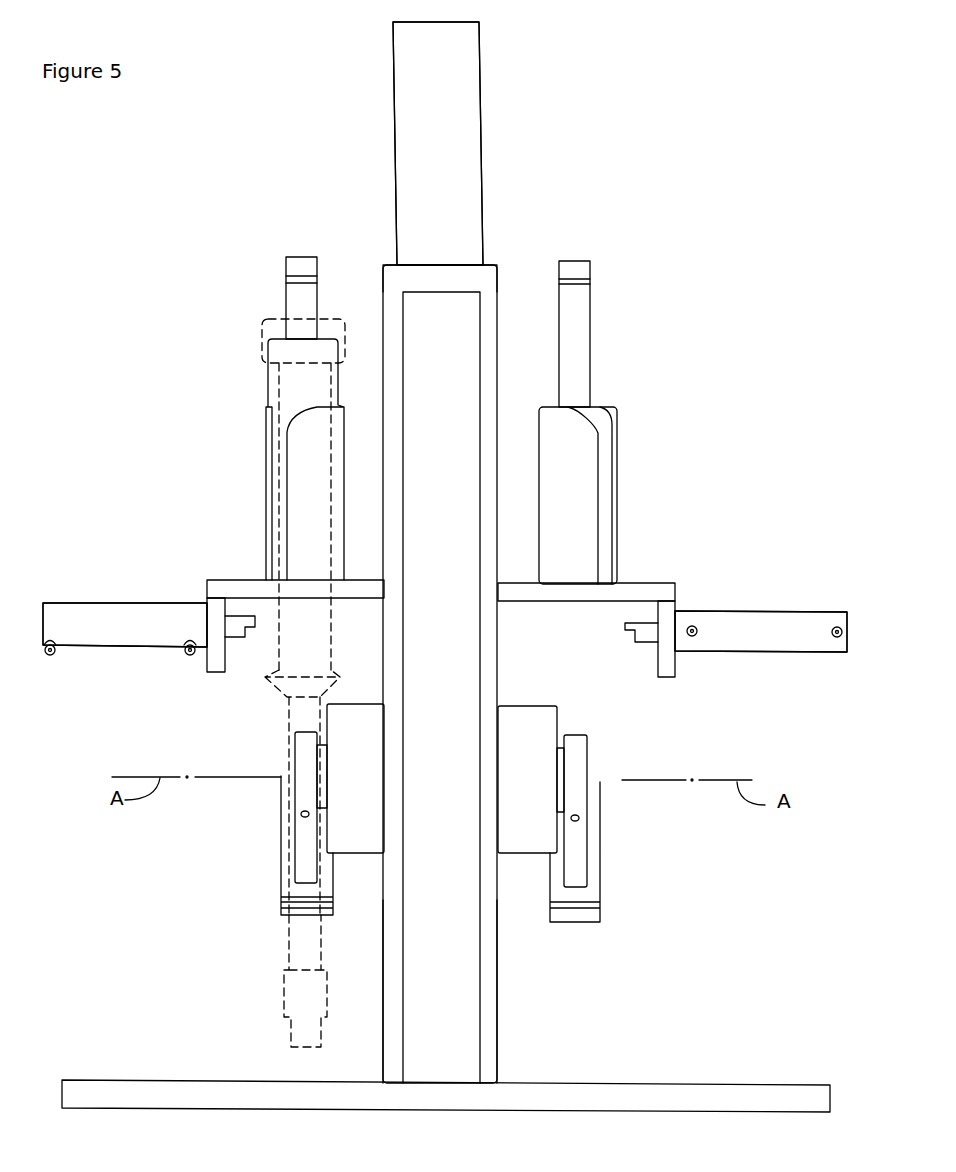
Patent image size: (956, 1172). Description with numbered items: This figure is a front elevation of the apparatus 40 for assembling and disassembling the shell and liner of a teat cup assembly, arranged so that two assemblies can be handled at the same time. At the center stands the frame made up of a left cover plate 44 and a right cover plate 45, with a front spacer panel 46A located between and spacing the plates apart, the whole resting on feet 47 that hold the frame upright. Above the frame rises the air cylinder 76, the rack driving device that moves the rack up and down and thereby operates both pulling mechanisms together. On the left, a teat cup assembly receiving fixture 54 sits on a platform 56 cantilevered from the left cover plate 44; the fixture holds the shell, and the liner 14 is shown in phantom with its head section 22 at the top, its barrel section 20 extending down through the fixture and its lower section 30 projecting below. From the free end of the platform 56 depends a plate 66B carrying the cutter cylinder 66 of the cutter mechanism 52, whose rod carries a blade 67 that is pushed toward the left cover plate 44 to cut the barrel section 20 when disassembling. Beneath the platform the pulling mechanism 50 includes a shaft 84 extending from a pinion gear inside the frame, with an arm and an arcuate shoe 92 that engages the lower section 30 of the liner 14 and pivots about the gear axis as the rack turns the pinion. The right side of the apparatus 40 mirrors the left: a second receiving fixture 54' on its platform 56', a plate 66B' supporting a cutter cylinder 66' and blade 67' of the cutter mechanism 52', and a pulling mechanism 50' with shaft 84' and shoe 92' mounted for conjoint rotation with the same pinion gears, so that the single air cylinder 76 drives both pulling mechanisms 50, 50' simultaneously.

The apparatus 40 is at (708, 172).
The air cylinder 76 is at (470, 133).
The left cover plate 44 is at (388, 283).
The right cover plate 45 is at (495, 280).
The front spacer panel 46A is at (462, 958).
The feet 47 is at (523, 1085).
The liner 14 is at (268, 305).
The head section 22 is at (268, 320).
The teat cup assembly receiving fixture 54 is at (254, 459).
The second teat cup assembly receiving fixture 54' is at (638, 422).
The barrel section 20 is at (306, 641).
The lower section 30 is at (290, 960).
The platform 56 is at (281, 562).
The platform 56' is at (600, 571).
The cutter cylinder 66 is at (125, 609).
The cutter cylinder 66' is at (761, 605).
The plate 66B is at (194, 657).
The plate 66B' is at (690, 659).
The blade 67 is at (242, 666).
The blade 67' is at (625, 659).
The cutter mechanism 52 is at (125, 660).
The cutter mechanism 52' is at (761, 674).
The pulling mechanism 50 is at (279, 837).
The pulling mechanism 50' is at (593, 844).
The shaft 84 is at (257, 807).
The shaft 84' is at (630, 805).
The shoe 92 is at (267, 845).
The shoe 92' is at (617, 852).